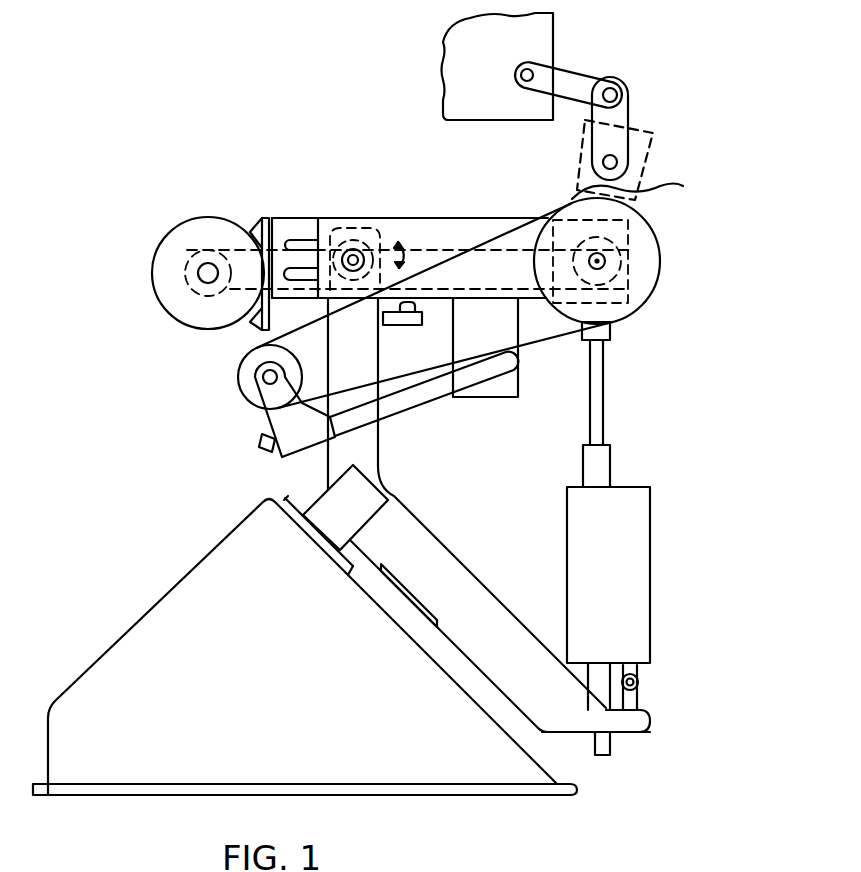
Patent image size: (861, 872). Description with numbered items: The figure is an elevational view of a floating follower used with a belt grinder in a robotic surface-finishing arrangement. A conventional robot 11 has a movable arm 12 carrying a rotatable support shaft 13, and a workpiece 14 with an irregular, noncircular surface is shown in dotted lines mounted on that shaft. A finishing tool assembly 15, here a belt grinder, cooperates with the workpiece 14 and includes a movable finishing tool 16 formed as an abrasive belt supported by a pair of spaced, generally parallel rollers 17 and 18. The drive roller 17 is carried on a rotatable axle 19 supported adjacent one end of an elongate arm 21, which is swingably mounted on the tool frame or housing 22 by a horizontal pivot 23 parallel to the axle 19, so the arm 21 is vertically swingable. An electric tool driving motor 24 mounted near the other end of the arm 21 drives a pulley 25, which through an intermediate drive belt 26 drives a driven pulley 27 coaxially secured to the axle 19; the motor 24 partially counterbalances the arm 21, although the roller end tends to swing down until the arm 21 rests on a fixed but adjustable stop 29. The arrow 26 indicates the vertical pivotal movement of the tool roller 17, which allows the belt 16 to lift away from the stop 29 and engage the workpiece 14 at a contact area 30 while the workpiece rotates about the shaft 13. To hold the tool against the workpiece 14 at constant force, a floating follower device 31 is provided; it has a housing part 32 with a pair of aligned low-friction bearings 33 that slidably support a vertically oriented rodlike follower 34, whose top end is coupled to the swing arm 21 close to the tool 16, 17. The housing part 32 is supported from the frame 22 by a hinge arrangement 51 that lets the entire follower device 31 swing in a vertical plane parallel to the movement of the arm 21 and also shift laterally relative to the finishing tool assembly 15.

The robot 11 is at (460, 58).
The movable arm 12 is at (580, 72).
The rotatable support shaft 13 is at (613, 161).
The workpiece 14 is at (643, 130).
The finishing tool assembly 15 is at (294, 197).
The movable finishing tool 16 is at (437, 262).
The drive roller 17 is at (645, 266).
The roller 18 is at (253, 372).
The axle 19 is at (600, 260).
The elongate arm 21 is at (474, 232).
The tool frame or housing 22 is at (440, 563).
The pivot 23 is at (353, 252).
The electric tool driving motor 24 is at (182, 237).
The pulley 25 is at (212, 262).
The intermediate drive belt 26 is at (410, 230).
The driven pulley 27 is at (640, 292).
The stop 29 is at (380, 308).
The contact area 30 is at (660, 196).
The follower device 31 is at (703, 468).
The housing part 32 is at (643, 580).
The low-friction guides or bearings 33 is at (605, 464).
The rodlike follower 34 is at (605, 400).
The hinge arrangement 51 is at (640, 679).